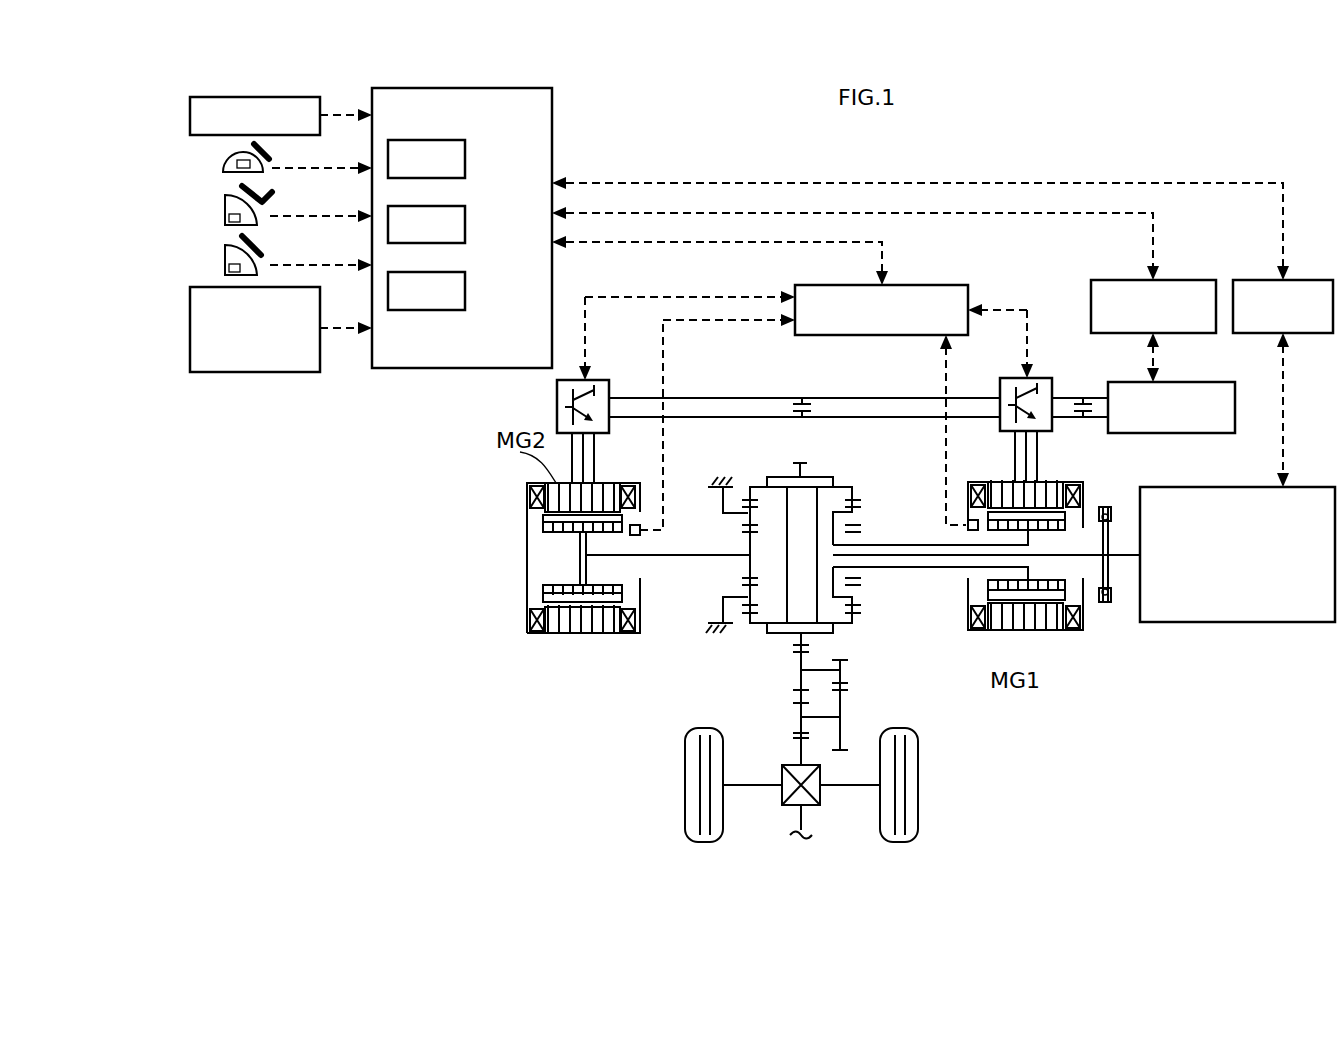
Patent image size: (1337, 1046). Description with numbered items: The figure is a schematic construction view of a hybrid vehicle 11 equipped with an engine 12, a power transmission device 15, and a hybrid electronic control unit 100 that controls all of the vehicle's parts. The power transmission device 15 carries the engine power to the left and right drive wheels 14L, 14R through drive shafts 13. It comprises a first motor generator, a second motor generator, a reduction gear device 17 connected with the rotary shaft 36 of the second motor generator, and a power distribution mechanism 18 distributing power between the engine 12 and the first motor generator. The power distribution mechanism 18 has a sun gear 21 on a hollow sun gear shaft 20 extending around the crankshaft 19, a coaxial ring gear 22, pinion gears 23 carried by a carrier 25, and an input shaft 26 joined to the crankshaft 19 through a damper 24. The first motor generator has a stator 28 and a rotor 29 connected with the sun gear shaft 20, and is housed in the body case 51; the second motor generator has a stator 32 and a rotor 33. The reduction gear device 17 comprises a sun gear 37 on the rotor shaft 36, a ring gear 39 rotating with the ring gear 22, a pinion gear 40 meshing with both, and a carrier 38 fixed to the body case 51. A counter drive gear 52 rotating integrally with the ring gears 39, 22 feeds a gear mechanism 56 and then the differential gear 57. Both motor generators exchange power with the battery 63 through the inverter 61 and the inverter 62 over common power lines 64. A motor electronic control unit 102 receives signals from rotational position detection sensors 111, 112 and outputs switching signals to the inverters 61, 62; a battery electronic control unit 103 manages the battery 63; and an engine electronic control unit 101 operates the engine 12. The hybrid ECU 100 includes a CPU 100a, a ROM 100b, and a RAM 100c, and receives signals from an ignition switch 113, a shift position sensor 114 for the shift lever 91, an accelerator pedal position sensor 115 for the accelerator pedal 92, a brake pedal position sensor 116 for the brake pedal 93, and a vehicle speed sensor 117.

The hybrid vehicle 11 is at (1047, 155).
The engine 12 is at (1262, 622).
The drive shaft 13 is at (868, 786).
The drive wheel 14L is at (684, 797).
The drive wheel 14R is at (918, 790).
The power transmission device 15 is at (758, 650).
The reduction gear device 17 is at (768, 474).
The power distribution mechanism 18 is at (861, 475).
The crankshaft 19 is at (1125, 560).
The sun gear shaft 20 is at (1005, 540).
The sun gear 21 is at (858, 588).
The ring gear 22 is at (855, 630).
The pinion gear 23 is at (858, 610).
The damper 24 is at (1104, 604).
The carrier 25 is at (830, 512).
The input shaft 26 is at (1010, 568).
The stator 28 is at (988, 482).
The rotor 29 is at (1052, 528).
The stator 32 is at (540, 503).
The rotor 33 is at (547, 534).
The rotary shaft 36 is at (676, 562).
The sun gear 37 is at (748, 547).
The carrier 38 is at (722, 497).
The ring gear 39 is at (744, 492).
The pinion gear 40 is at (744, 510).
The body case 51 is at (1005, 632).
The counter drive gear 52 is at (792, 643).
The gear mechanism 56 is at (862, 682).
The differential gear 57 is at (822, 797).
The inverter 61 is at (1040, 378).
The inverter 62 is at (590, 380).
The battery 63 is at (1185, 433).
The power lines 64 is at (868, 412).
The shift lever 91 is at (266, 155).
The accelerator pedal 92 is at (266, 205).
The brake pedal 93 is at (266, 253).
The hybrid electronic control unit 100 is at (552, 118).
The CPU 100a is at (465, 158).
The ROM 100b is at (465, 224).
The RAM 100c is at (465, 290).
The engine electronic control unit 101 is at (1290, 280).
The motor electronic control unit 102 is at (930, 285).
The battery electronic control unit 103 is at (1105, 280).
The rotational position detection sensor 111 is at (966, 527).
The rotational position detection sensor 112 is at (636, 522).
The ignition switch 113 is at (190, 108).
The shift position sensor 114 is at (222, 162).
The accelerator pedal position sensor 115 is at (224, 212).
The brake pedal position sensor 116 is at (224, 260).
The vehicle speed sensor 117 is at (190, 325).